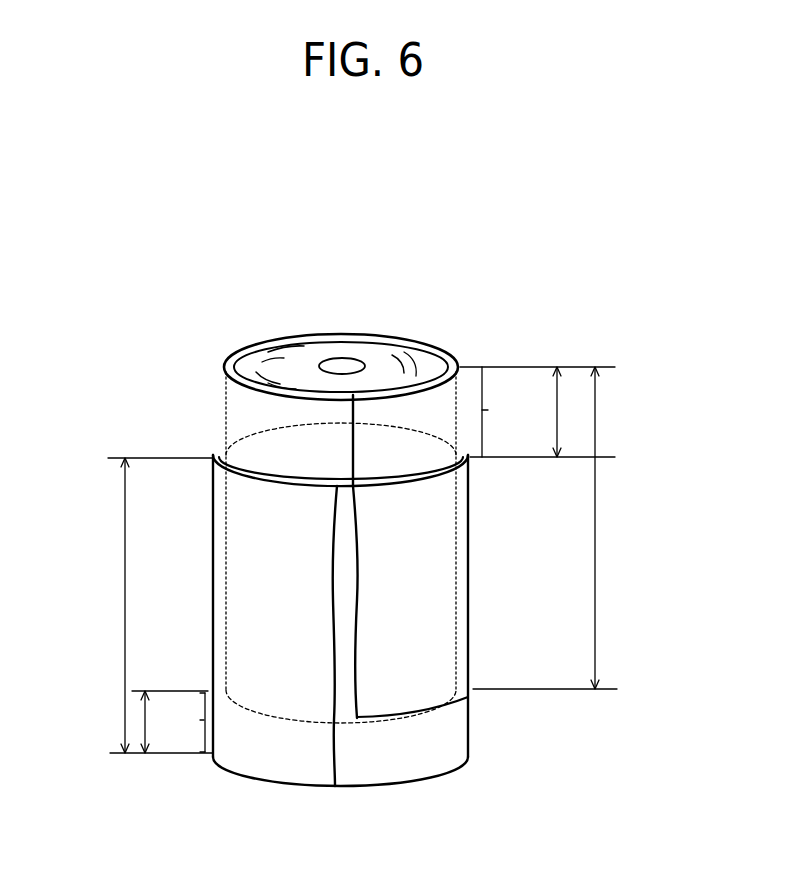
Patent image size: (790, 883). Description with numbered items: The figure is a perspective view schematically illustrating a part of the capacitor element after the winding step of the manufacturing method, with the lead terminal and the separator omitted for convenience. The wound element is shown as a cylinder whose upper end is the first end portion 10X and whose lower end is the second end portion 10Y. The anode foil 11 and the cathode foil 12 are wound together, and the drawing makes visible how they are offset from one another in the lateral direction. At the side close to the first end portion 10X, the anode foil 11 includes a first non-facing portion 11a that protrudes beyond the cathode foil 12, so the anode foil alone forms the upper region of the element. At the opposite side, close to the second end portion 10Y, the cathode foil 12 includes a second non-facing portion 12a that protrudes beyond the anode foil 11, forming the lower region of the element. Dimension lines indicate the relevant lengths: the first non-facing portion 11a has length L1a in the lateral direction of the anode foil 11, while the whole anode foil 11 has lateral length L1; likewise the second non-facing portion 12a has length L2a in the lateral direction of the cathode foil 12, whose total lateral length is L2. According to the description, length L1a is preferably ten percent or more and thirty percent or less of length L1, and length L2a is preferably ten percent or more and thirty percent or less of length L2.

The first end portion 10X is at (434, 326).
The anode foil 11 is at (243, 405).
The first non-facing portion 11a is at (504, 412).
The cathode foil 12 is at (270, 758).
The second non-facing portion 12a is at (184, 722).
The second end portion 10Y is at (455, 781).
The length of anode foil in the lateral direction L1 is at (595, 540).
The length of first non-facing portion L1a is at (557, 412).
The length of cathode foil in the lateral direction L2 is at (125, 592).
The length of second non-facing portion L2a is at (145, 727).